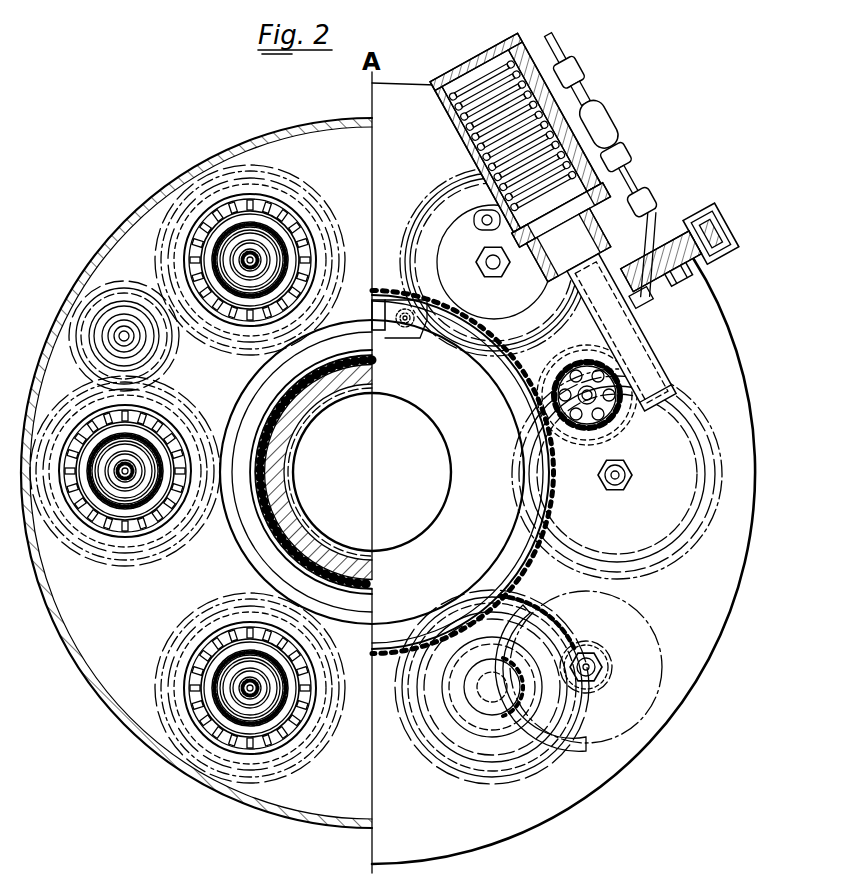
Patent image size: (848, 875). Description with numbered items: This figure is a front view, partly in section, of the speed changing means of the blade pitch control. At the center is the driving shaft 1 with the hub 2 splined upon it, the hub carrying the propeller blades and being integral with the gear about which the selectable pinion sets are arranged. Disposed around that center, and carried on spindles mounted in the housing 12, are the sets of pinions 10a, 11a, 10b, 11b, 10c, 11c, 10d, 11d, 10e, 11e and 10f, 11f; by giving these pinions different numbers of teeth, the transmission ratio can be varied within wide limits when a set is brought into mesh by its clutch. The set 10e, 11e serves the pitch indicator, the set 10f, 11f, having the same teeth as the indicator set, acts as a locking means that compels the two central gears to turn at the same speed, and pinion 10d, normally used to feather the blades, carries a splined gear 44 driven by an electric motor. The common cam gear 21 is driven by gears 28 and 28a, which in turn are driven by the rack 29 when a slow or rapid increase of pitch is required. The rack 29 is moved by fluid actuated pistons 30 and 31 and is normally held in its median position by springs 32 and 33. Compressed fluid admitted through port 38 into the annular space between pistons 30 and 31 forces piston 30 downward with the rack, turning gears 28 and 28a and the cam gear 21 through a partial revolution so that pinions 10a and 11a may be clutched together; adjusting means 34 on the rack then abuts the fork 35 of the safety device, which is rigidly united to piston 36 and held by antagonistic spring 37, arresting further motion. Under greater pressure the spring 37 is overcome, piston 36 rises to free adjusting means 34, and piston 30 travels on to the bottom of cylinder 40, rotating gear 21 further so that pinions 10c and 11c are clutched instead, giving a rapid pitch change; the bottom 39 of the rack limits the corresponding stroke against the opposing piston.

The driving shaft 1 is at (372, 472).
The hub 2 is at (283, 507).
The pinion 10a is at (416, 234).
The pinion 10b is at (270, 176).
The pinion 10c is at (680, 420).
The pinion 10d is at (95, 546).
The pinion 10e is at (200, 737).
The pinion 10f is at (560, 752).
The pinion 11a is at (438, 208).
The pinion 11b is at (296, 203).
The pinion 11c is at (690, 452).
The pinion 11d is at (70, 578).
The pinion 11e is at (110, 771).
The pinion 11f is at (575, 826).
The housing 12 is at (70, 654).
The cam gear 21 is at (559, 510).
The gear 28 is at (624, 424).
The gear 28a is at (619, 440).
The rack 29 is at (640, 370).
The piston 30 is at (624, 175).
The piston 31 is at (533, 96).
The spring 32 is at (540, 110).
The spring 33 is at (494, 76).
The adjusting means 34 is at (640, 302).
The fork 35 is at (566, 256).
The piston 36 is at (660, 290).
The antagonistic spring 37 is at (716, 246).
The port 38 is at (600, 116).
The bottom of rack 39 is at (548, 280).
The cylinder 40 is at (533, 275).
The gear 44 is at (121, 300).